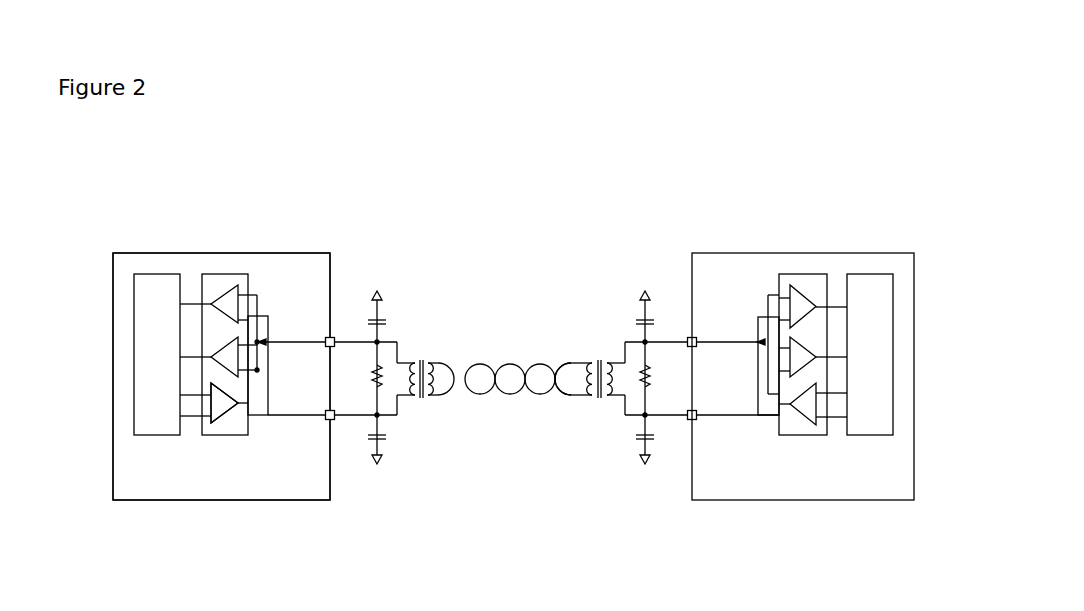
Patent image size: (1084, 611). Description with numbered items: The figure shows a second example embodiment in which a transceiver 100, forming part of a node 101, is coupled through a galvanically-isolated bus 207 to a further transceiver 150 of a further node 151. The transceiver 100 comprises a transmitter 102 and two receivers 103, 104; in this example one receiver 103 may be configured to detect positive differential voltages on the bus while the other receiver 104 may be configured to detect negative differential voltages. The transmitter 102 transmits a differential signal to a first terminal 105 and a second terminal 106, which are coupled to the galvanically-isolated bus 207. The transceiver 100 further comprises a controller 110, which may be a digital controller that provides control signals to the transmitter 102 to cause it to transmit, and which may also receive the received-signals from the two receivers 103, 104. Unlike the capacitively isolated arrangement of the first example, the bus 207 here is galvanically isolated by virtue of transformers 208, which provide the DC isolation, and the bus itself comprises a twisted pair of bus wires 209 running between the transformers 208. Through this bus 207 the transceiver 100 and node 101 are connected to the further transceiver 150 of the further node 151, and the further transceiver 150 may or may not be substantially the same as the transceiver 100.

The transceiver 100 is at (204, 251).
The node 101 is at (135, 252).
The transmitter 102 is at (215, 413).
The receiver 103 is at (226, 302).
The receiver 104 is at (220, 365).
The first terminal 105 is at (334, 337).
The second terminal 106 is at (332, 420).
The controller 110 is at (145, 407).
The further transceiver 150 is at (842, 266).
The further node 151 is at (897, 252).
The galvanically-isolated bus 207 is at (519, 344).
The transformers 208 is at (593, 397).
The twisted pair of bus wires 209 is at (577, 359).